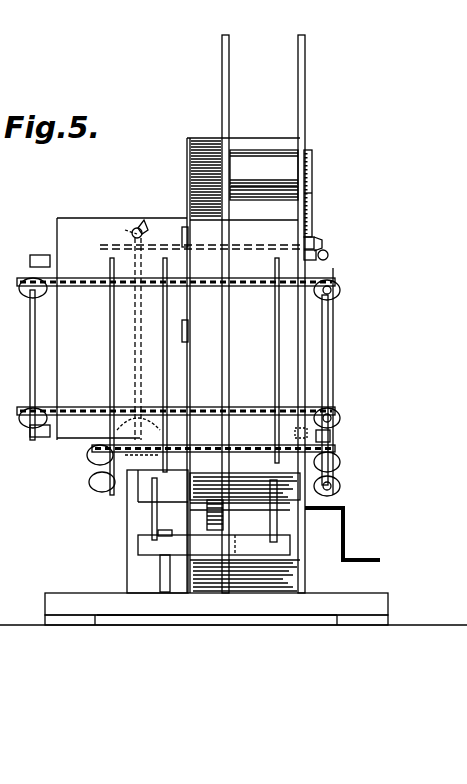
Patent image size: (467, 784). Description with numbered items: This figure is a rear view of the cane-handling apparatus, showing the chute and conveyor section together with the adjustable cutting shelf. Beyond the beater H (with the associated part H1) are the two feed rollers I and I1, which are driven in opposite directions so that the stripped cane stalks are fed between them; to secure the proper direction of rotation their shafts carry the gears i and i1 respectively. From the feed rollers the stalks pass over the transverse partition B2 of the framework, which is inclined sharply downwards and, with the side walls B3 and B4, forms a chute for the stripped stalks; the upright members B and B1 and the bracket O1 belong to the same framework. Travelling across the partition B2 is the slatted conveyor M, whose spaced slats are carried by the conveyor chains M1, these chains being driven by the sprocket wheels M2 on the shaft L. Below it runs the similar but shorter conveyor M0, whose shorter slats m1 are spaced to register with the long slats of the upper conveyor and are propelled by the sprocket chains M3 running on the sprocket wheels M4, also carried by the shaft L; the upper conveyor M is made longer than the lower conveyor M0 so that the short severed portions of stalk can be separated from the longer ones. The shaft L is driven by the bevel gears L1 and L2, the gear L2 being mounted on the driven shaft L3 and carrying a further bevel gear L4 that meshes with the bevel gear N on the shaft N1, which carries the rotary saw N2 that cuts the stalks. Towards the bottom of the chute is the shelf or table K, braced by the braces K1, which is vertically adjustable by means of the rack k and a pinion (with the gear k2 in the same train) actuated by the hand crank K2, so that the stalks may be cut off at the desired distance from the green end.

The guide rod B is at (306, 84).
The guide rod B1 is at (222, 78).
The transverse partition B2 is at (57, 218).
The side wall B3 is at (305, 387).
The side wall B4 is at (187, 165).
The feed roller I is at (274, 160).
The feed roller I1 is at (248, 186).
The gear i is at (312, 162).
The gear i1 is at (312, 200).
The shaft L is at (328, 354).
The bevel gear L1 is at (326, 255).
The bevel gear L2 is at (318, 242).
The driven shaft L3 is at (262, 250).
The bevel gear L4 is at (146, 226).
The slatted conveyor M is at (278, 332).
The slatted conveyor M0 is at (332, 438).
The conveyor chain M1 is at (258, 283).
The sprocket wheel M2 is at (340, 292).
The sprocket chain M3 is at (207, 445).
The sprocket wheel M4 is at (340, 462).
The short slat m1 is at (278, 435).
The bevel gear N is at (135, 230).
The shaft N1 is at (133, 262).
The rotary saw N2 is at (132, 408).
The bracket O1 is at (188, 328).
The shelf K is at (142, 490).
The brace K1 is at (152, 510).
The hand crank K2 is at (380, 558).
The rack k is at (232, 533).
The gear k2 is at (207, 500).
The beater H is at (73, 628).
The base plate H1 is at (271, 627).